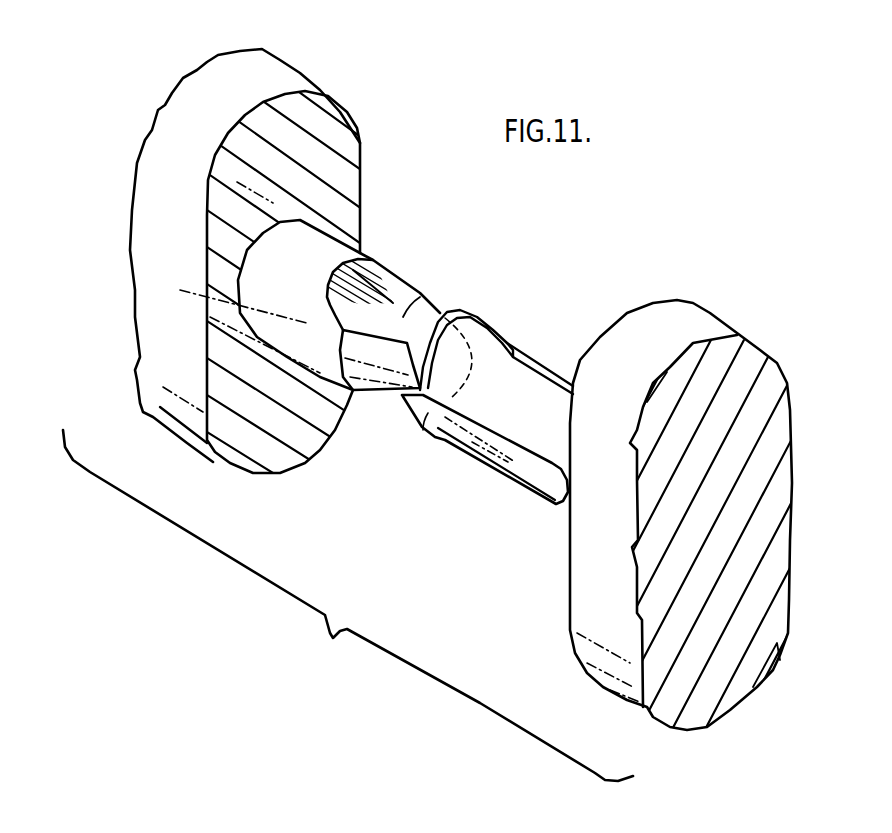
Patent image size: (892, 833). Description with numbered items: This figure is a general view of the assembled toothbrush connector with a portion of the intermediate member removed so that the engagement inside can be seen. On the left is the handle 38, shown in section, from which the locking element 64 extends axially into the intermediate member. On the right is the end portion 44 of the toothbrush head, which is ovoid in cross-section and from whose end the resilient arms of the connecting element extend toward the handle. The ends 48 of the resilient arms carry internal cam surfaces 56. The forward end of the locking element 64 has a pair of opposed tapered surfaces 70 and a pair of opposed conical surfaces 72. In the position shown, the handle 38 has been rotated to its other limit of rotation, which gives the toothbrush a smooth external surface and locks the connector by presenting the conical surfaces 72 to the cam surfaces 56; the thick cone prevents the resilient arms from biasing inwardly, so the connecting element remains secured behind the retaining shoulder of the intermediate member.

The handle 38 is at (262, 276).
The end portion 44 is at (658, 505).
The ends of the resilient arms 48 is at (538, 341).
The cam surfaces 56 is at (484, 449).
The locking element 64 is at (380, 266).
The tapered surfaces 70 is at (466, 332).
The conical surfaces 72 is at (380, 385).